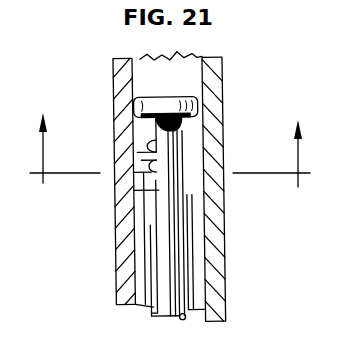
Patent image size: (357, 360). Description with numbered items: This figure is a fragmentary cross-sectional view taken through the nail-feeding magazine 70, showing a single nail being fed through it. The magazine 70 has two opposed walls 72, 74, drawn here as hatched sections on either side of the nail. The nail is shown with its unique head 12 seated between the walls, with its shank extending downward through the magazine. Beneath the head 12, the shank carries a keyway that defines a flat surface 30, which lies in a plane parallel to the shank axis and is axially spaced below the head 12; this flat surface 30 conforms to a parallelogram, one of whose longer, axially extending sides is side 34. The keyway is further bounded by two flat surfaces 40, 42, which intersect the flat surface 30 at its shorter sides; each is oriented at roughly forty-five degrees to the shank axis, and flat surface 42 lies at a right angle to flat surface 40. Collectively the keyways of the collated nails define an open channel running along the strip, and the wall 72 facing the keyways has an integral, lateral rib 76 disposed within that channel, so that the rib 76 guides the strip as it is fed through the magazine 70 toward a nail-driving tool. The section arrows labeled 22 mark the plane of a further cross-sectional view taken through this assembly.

The head 12 is at (150, 97).
The section line 22 is at (171, 160).
The flat surface 30 is at (157, 147).
The longer axially extending side 34 is at (157, 172).
The flat surface 40 is at (183, 132).
The flat surface 42 is at (157, 192).
The nail-feeding magazine 70 is at (189, 51).
The wall 72 is at (125, 78).
The wall 74 is at (210, 88).
The lateral rib 76 is at (130, 170).